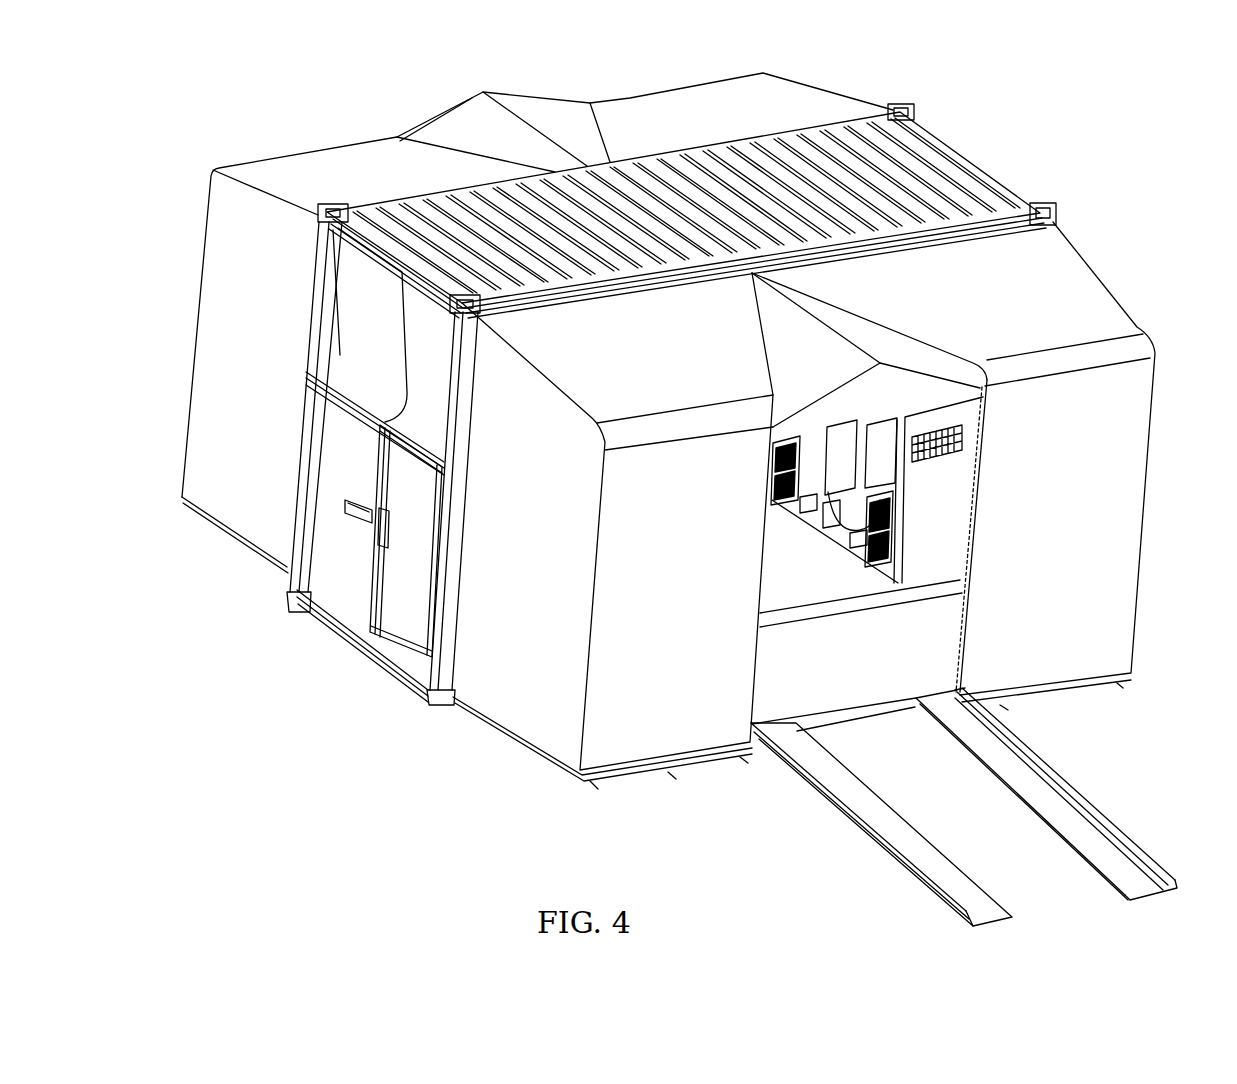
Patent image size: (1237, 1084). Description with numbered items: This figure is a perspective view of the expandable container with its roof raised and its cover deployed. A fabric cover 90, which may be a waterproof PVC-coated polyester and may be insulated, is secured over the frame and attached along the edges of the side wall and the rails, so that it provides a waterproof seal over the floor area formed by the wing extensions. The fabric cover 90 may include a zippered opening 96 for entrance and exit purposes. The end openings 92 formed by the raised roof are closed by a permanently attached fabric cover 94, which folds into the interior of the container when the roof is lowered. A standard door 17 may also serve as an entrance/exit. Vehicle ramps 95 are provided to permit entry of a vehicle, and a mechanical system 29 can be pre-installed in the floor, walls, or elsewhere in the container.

The standard door 17 is at (400, 612).
The mechanical system 29 is at (947, 511).
The fabric cover 90 is at (320, 170).
The end opening 92 is at (330, 298).
The permanently attached fabric cover 94 is at (432, 398).
The vehicle ramp 95 is at (807, 785).
The zippered opening 96 is at (968, 612).